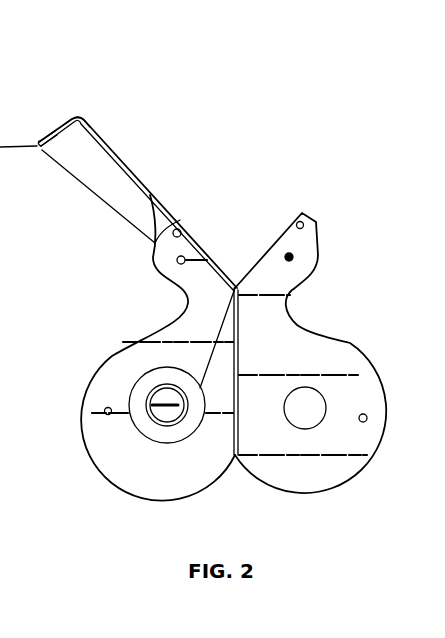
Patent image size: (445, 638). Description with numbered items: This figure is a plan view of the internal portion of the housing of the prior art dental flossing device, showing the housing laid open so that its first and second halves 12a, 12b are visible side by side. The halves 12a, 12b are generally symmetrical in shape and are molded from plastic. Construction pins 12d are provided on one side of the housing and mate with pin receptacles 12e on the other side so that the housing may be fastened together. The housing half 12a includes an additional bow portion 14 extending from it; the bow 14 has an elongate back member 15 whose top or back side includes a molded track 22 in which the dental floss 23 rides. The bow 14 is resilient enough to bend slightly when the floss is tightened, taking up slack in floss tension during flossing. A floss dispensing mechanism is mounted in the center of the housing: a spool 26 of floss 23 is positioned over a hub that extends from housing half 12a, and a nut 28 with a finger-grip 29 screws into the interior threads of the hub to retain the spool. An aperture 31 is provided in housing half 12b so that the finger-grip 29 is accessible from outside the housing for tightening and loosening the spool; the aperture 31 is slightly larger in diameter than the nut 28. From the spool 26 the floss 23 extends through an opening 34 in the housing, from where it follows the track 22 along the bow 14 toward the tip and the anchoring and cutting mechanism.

The first housing half 12a is at (130, 468).
The second housing half 12b is at (307, 473).
The construction pins 12d is at (294, 257).
The pin receptacles 12e is at (177, 260).
The bow portion 14 is at (58, 128).
The elongate back member 15 is at (145, 180).
The molded track 22 is at (79, 119).
The dental floss 23 is at (95, 197).
The spool 26 is at (188, 427).
The nut 28 is at (148, 399).
The finger-grip 29 is at (165, 400).
The aperture 31 is at (319, 390).
The opening 34 is at (236, 286).